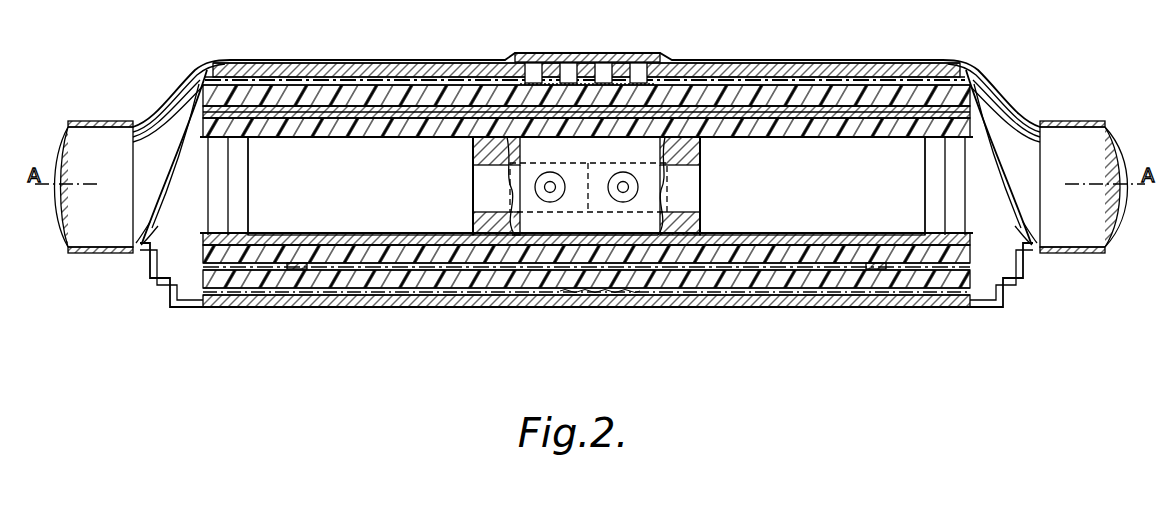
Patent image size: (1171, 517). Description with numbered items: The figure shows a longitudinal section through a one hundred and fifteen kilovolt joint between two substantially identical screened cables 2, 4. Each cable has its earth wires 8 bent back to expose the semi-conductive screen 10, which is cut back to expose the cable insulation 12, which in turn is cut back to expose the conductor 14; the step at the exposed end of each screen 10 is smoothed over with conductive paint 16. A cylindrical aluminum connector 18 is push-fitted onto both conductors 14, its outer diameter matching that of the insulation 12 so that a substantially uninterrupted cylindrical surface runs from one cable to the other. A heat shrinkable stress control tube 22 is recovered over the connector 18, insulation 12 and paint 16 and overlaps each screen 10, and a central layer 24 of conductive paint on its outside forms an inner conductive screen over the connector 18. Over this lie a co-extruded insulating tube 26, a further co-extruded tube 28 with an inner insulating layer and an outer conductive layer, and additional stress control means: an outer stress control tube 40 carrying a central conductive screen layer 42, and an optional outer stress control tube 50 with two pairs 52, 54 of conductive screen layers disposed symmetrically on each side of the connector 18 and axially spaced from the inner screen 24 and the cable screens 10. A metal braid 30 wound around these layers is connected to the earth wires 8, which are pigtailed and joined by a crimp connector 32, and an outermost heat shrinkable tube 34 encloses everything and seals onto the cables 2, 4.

The cable 2 is at (62, 110).
The cable 4 is at (1123, 110).
The earth wires 8 is at (153, 133).
The semi-conductive screen 10 is at (177, 199).
The cable insulation 12 is at (298, 199).
The cable conductor 14 is at (483, 184).
The conductive paint 16 is at (248, 165).
The connector 18 is at (700, 152).
The stress control tube 22 is at (385, 233).
The layer of conductive paint 24 is at (712, 245).
The co-extruded tube 26 is at (409, 245).
The recoverable co-extruded tube 28 is at (316, 275).
The metal braid 30 is at (680, 295).
The crimp connector 32 is at (568, 63).
The outermost heat shrinkable tube 34 is at (469, 60).
The outer stress control tube 40 is at (905, 112).
The conductive screen layer 42 is at (810, 106).
The outer stress control tube 50 is at (478, 270).
The pair of conductive screen layers 52 is at (382, 270).
The pair of conductive screen layers 54 is at (293, 269).